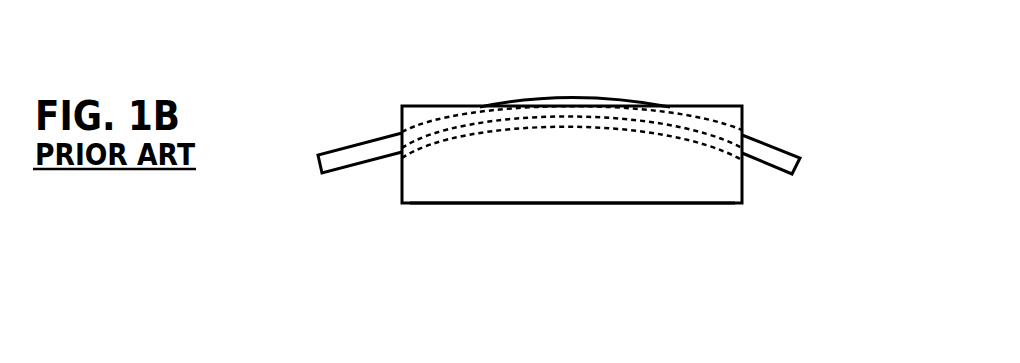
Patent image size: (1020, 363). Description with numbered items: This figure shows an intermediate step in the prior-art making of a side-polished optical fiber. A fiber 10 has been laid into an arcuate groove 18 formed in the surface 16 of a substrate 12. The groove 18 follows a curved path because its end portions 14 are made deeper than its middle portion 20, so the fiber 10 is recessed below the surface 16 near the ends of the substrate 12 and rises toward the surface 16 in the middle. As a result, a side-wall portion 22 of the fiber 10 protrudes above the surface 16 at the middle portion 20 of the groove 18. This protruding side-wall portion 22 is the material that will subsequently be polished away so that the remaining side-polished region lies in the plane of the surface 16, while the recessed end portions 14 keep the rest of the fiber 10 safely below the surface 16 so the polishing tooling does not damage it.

The fiber 10 is at (772, 152).
The substrate 12 is at (722, 190).
The end portions 14 is at (735, 113).
The surface 16 is at (427, 104).
The arcuate groove 18 is at (700, 148).
The middle portion 20 is at (575, 123).
The side-wall portion 22 is at (584, 87).